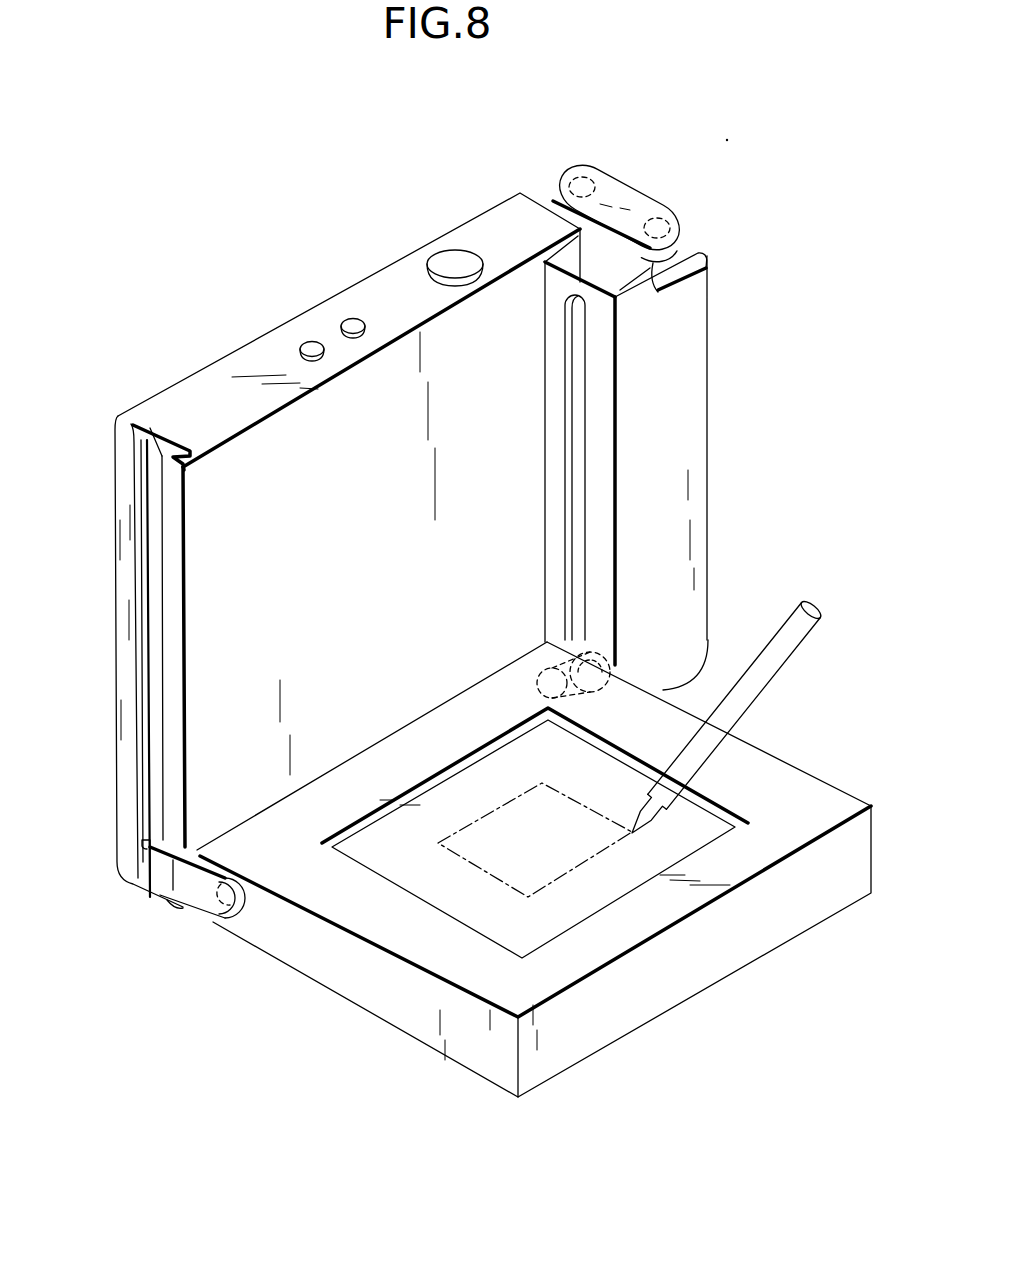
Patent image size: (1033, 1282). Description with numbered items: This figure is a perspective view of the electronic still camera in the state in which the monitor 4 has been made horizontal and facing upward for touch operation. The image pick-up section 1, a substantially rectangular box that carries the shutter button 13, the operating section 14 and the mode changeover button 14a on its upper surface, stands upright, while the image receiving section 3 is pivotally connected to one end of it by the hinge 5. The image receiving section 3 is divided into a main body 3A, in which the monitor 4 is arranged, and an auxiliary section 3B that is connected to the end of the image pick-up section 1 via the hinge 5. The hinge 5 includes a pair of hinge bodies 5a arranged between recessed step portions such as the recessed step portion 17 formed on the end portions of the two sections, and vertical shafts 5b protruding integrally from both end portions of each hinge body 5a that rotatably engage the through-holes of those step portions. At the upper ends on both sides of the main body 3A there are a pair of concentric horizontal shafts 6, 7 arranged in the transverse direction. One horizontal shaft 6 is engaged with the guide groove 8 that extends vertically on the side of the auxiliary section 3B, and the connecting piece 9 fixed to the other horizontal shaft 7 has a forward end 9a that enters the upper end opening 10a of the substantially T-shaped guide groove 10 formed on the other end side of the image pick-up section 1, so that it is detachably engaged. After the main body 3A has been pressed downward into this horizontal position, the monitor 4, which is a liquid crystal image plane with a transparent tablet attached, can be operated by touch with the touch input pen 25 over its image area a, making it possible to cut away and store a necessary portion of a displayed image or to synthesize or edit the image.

The image pick-up section 1 is at (273, 350).
The image receiving section 3 is at (534, 666).
The main body of the image receiving section 3A is at (534, 860).
The auxiliary section 3B is at (579, 450).
The monitor 4 is at (497, 927).
The hinge 5 is at (649, 388).
The hinge body 5a is at (647, 200).
The vertical shaft 5b is at (577, 180).
The horizontal shaft 6 is at (546, 694).
The horizontal shaft 7 is at (237, 876).
The guide groove 8 is at (577, 357).
The connecting piece 9 is at (200, 907).
The forward end of the connecting piece 9a is at (143, 838).
The guide groove 10 is at (153, 736).
The upper end opening of the guide groove 10a is at (160, 447).
The shutter button 13 is at (462, 258).
The operating section 14 is at (326, 318).
The mode changeover button 14a is at (356, 323).
The recessed step portion 17 is at (678, 274).
The touch input pen 25 is at (795, 652).
The writing area a is at (473, 868).